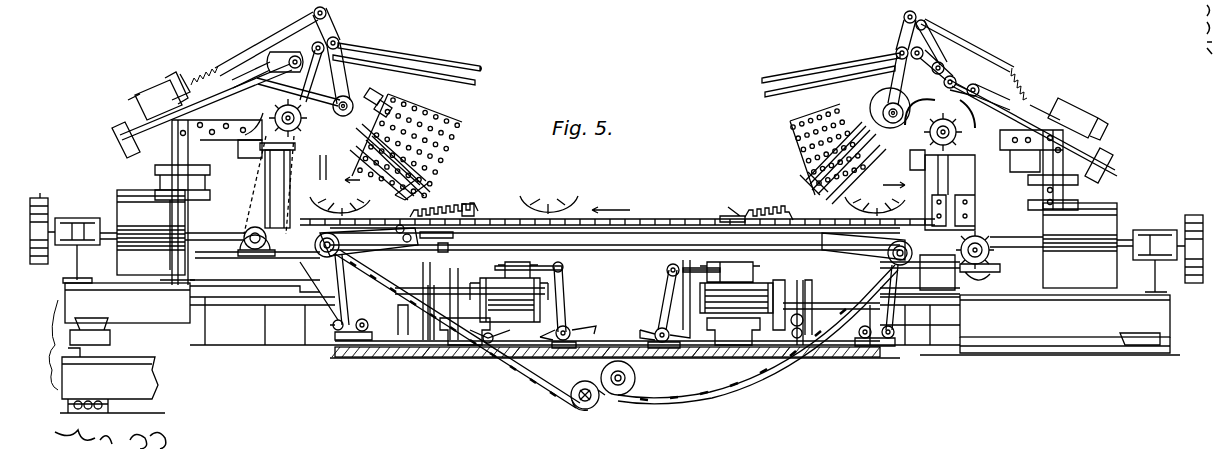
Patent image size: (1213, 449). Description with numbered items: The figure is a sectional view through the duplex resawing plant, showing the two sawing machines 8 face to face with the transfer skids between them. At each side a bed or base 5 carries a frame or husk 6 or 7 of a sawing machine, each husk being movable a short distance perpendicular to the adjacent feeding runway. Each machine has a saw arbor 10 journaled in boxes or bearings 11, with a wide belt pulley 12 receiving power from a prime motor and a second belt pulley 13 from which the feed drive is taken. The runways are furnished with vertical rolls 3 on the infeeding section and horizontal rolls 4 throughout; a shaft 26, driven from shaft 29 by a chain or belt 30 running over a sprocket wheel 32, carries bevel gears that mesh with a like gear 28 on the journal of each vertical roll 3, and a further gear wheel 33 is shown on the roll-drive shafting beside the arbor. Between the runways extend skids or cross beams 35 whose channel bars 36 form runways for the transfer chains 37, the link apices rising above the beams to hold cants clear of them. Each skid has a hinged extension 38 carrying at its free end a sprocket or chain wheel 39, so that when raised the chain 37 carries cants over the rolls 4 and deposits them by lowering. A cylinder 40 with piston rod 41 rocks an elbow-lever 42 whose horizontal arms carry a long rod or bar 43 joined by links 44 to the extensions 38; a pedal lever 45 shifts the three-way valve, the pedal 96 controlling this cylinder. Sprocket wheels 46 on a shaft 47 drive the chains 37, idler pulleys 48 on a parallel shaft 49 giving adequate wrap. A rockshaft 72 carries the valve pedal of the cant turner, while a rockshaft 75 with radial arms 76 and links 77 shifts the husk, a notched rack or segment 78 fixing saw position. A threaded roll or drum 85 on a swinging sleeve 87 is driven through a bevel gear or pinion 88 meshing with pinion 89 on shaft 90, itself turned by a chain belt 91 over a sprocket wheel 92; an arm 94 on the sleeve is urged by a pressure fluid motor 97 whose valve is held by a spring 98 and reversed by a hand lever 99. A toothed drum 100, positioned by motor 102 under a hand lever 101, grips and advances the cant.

The vertical rolls 3 is at (995, 190).
The horizontal rolls 4 is at (878, 262).
The bed or base 5 is at (1008, 340).
The frame or husk 6 is at (119, 348).
The frame or husk 7 is at (1102, 325).
The sawing machine 8 is at (323, 160).
The saw arbor 10 is at (1010, 238).
The boxes or bearings 11 is at (1152, 230).
The belt pulley 12 is at (617, 239).
The belt pulley 13 is at (1195, 283).
The shaft 26 is at (960, 132).
The bevel gear 28 is at (910, 158).
The shaft 29 is at (988, 268).
The chain or belt 30 is at (258, 190).
The sprocket wheel or pulley 32 is at (255, 155).
The bevel gear 33 is at (990, 254).
The skids or cross beams 35 is at (615, 239).
The channel bars 36 is at (455, 235).
The transfer chains 37 is at (680, 218).
The hinged or pivoted extension 38 is at (612, 244).
The sprocket or chain wheel 39 is at (908, 300).
The cylinder 40 is at (770, 280).
The piston rod 41 is at (825, 303).
The elbow-lever 42 is at (880, 346).
The rod or bar 43 is at (895, 340).
The links 44 is at (724, 262).
The lever 45 is at (668, 290).
The sprocket wheels 46 is at (578, 408).
The shaft 47 is at (598, 408).
The idler pulleys 48 is at (628, 390).
The shaft 49 is at (602, 372).
The rockshaft 72 is at (486, 345).
The rockshaft 75 is at (812, 365).
The radial arms 76 is at (795, 350).
The links 77 is at (808, 350).
The notched rack or segment 78 is at (778, 292).
The roll or drum 85 is at (790, 198).
The swinging sleeve 87 is at (365, 150).
The bevel gear or pinion 88 is at (388, 106).
The bevel gear or pinion 89 is at (374, 88).
The shaft 90 is at (882, 113).
The chain belt 91 is at (895, 140).
The sprocket wheel 92 is at (877, 103).
The arm 94 is at (898, 70).
The pedal 96 is at (596, 328).
The pressure fluid motor 97 is at (148, 125).
The spring 98 is at (1040, 88).
The hand lever 99 is at (780, 92).
The drum 100 is at (800, 142).
The hand lever 101 is at (812, 78).
The motor 102 is at (1105, 170).